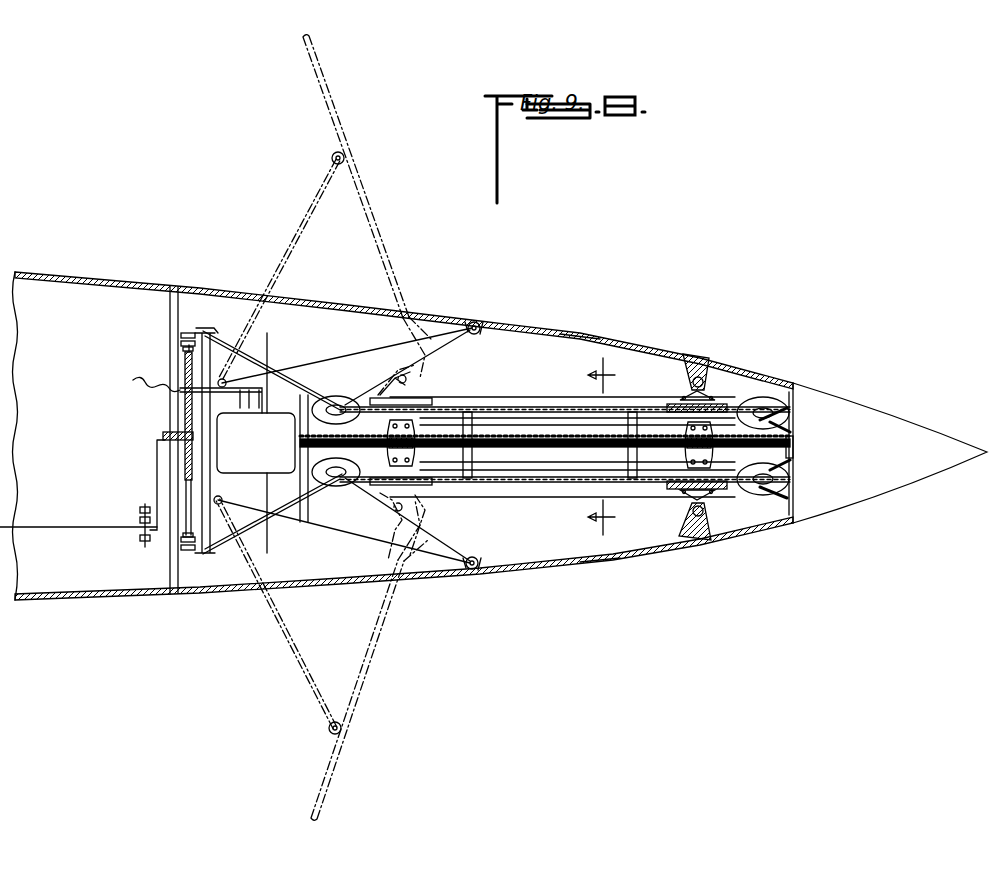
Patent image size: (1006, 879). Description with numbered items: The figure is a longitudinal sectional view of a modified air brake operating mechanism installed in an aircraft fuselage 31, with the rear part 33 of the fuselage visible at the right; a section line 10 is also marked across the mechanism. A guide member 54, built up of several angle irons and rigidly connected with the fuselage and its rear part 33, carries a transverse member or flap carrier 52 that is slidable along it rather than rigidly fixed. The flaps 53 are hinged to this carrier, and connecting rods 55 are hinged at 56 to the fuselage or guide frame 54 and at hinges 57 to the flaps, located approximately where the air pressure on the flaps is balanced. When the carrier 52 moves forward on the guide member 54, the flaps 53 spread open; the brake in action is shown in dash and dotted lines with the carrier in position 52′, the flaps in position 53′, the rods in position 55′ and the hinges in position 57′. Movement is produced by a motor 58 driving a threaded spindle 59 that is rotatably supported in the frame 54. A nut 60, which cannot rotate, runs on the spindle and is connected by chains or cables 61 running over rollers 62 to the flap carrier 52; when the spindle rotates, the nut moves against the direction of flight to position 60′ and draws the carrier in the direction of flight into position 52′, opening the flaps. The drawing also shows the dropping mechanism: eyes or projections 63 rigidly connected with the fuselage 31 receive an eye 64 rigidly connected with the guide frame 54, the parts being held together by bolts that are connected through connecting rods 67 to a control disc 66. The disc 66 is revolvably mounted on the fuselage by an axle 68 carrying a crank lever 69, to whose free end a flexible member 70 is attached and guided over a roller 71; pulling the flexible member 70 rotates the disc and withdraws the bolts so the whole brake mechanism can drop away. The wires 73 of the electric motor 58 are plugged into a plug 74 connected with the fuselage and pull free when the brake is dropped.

The section line 10 is at (590, 446).
The fuselage 31 is at (94, 272).
The rear part of the fuselage 33 is at (843, 418).
The transverse member 52 is at (683, 373).
The position of flap carrier 52′ is at (412, 386).
The flaps 53 is at (583, 395).
The position of flaps 53′ is at (338, 117).
The guide member 54 is at (510, 405).
The connecting rods 55 is at (432, 320).
The position of connecting rods 55′ is at (313, 208).
The hinge 56 is at (222, 379).
The hinges 57 is at (478, 322).
The position of hinges 57′ is at (337, 153).
The motor 58 is at (278, 418).
The threaded spindle 59 is at (668, 458).
The nut 60 is at (408, 458).
The position of nut 60′ is at (723, 400).
The chains or cables 61 is at (385, 400).
The rollers 62 is at (342, 405).
The eyes or projections 63 is at (180, 347).
The eye or projection 64 is at (207, 333).
The control or actuating disc 66 is at (187, 467).
The connecting rods 67 is at (187, 367).
The axle 68 is at (163, 435).
The crank lever 69 is at (153, 460).
The flexible member 70 is at (40, 527).
The roller 71 is at (143, 530).
The wires 73 is at (250, 414).
The plug 74 is at (187, 392).